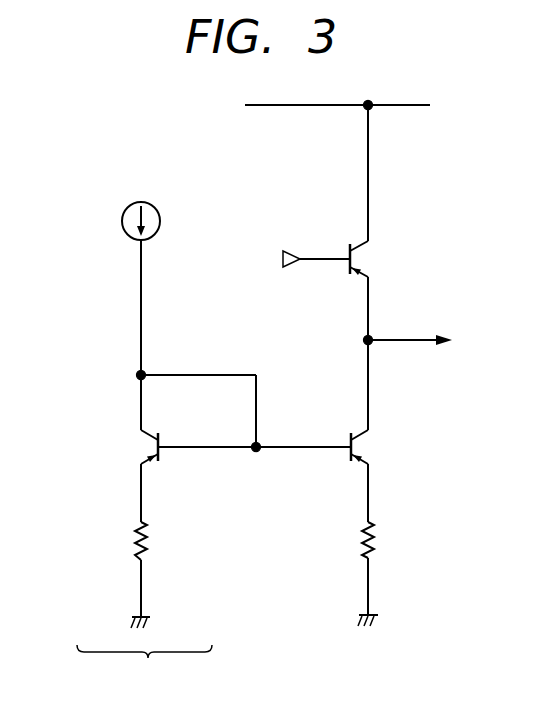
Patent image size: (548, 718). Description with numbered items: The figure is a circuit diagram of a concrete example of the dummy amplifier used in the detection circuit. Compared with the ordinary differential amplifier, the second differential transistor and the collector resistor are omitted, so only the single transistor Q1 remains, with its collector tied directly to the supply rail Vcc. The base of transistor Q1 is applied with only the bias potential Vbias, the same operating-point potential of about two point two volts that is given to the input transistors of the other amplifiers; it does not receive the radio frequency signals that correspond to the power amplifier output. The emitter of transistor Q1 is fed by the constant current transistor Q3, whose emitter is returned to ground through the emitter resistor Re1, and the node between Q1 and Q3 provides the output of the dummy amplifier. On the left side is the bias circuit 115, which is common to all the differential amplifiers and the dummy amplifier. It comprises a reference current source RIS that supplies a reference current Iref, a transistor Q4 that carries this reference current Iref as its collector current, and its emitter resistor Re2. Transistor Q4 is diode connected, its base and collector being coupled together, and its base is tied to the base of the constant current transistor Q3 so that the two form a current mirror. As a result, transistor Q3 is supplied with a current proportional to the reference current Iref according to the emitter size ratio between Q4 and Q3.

The supply voltage Vcc is at (359, 107).
The bias potential Vbias is at (286, 260).
The transistor Q1 is at (375, 222).
The constant current transistor Q3 is at (376, 431).
The transistor Q4 is at (130, 448).
The emitter resistor Re1 is at (346, 574).
The emitter resistor Re2 is at (117, 575).
The reference current source RIS is at (123, 219).
The reference current Iref is at (127, 305).
The bias circuit 115 is at (144, 669).